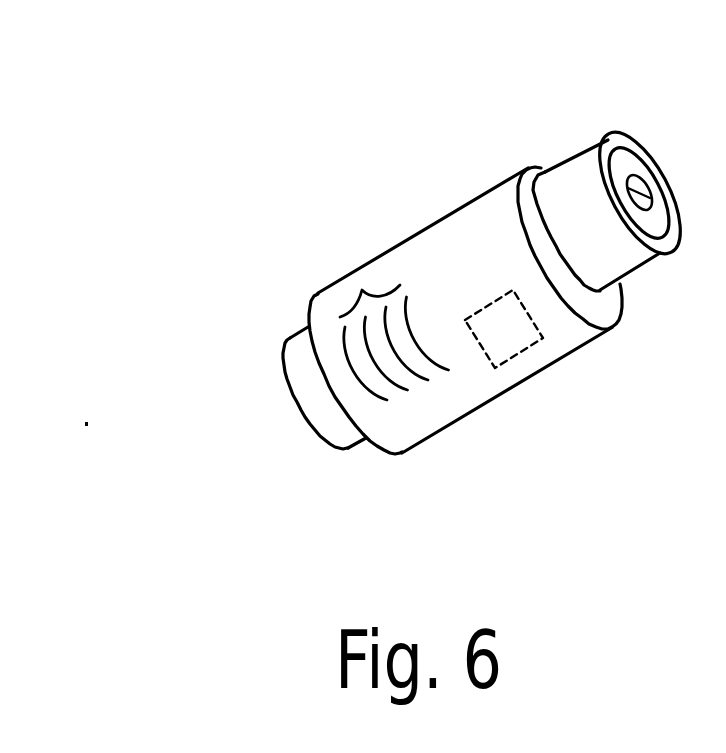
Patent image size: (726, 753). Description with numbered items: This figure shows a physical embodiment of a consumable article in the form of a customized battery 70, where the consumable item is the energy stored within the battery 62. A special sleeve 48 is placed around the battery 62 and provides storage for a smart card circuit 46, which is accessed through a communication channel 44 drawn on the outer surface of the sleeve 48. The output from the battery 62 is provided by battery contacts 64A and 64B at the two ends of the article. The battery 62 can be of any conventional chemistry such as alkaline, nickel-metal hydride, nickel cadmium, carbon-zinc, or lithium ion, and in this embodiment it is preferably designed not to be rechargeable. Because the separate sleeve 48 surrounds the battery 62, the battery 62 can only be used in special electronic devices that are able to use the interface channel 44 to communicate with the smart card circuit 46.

The customized battery 70 is at (237, 364).
The sleeve 48 is at (447, 257).
The communication channel 44 is at (362, 290).
The smart card circuit 46 is at (512, 335).
The battery 62 is at (570, 193).
The battery contact 64B is at (645, 185).
The battery contact 64A is at (290, 402).